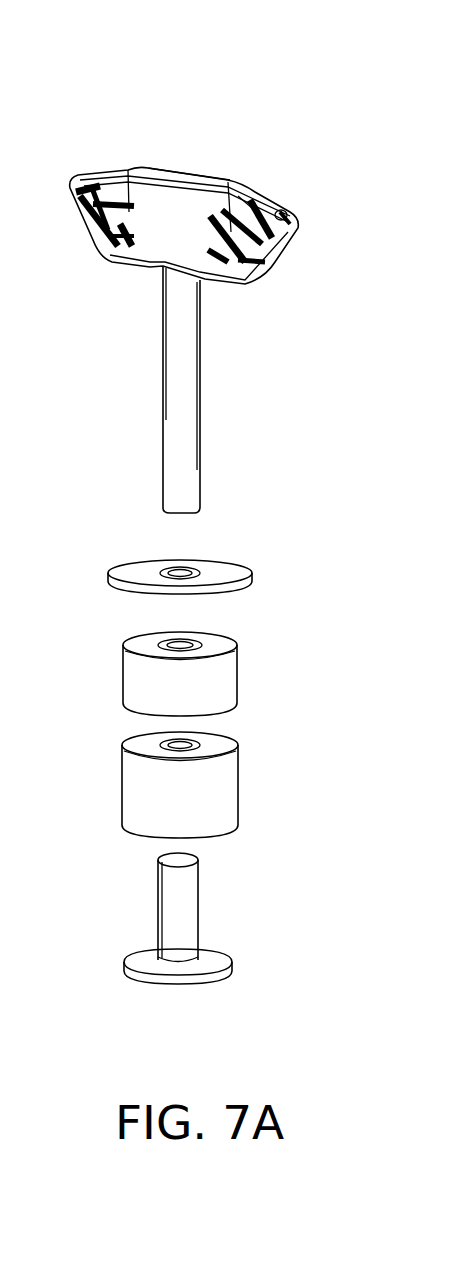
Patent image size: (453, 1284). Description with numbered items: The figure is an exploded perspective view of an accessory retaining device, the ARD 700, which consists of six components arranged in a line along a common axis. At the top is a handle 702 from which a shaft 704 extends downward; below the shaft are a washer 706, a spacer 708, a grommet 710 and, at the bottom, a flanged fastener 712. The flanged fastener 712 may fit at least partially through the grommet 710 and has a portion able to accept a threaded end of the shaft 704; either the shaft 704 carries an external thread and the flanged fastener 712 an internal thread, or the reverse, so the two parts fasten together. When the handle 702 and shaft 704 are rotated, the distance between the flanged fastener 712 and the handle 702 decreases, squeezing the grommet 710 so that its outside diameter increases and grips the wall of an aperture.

The ARD 700 is at (253, 56).
The handle 702 is at (197, 176).
The shaft 704 is at (162, 330).
The washer 706 is at (120, 558).
The spacer 708 is at (121, 648).
The grommet 710 is at (121, 745).
The flanged fastener 712 is at (156, 897).